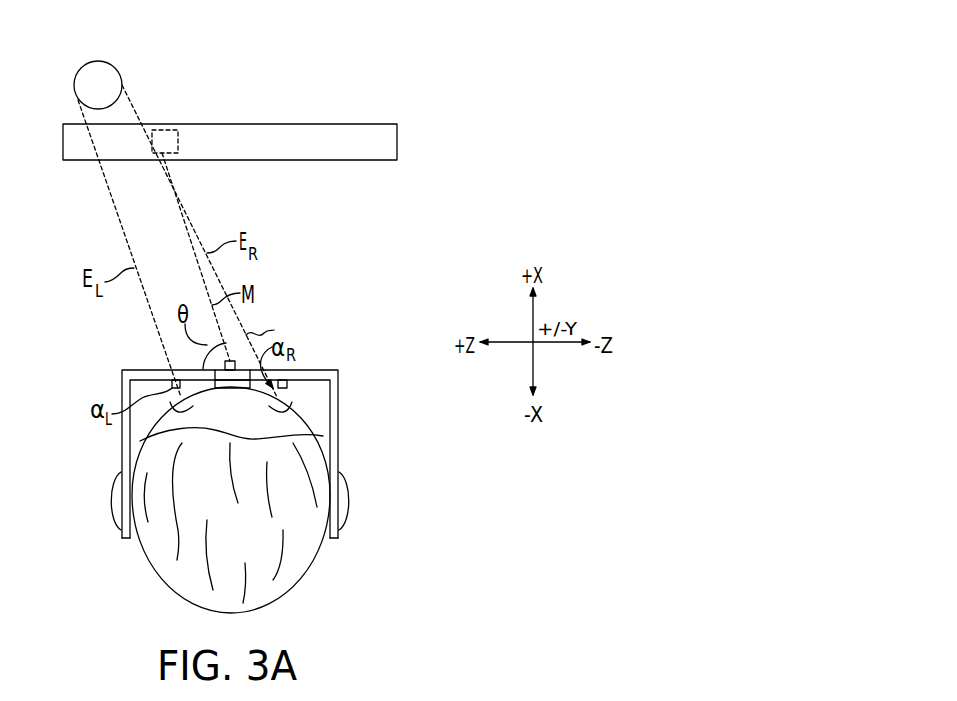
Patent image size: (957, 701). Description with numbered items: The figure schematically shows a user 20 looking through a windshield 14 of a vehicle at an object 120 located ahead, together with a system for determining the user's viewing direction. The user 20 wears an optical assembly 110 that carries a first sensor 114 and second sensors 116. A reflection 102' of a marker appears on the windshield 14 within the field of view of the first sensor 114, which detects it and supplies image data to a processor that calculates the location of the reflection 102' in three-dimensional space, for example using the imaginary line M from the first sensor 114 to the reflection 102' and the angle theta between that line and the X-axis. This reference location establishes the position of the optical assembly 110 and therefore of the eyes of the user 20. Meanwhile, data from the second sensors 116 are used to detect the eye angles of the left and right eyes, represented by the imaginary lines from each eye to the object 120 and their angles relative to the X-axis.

The object 120 is at (96, 61).
The windshield 14 is at (267, 124).
The reflection of the marker 102' is at (181, 114).
The optical assembly 110 is at (110, 457).
The first sensor 114 is at (238, 358).
The second sensors 116 is at (177, 369).
The user 20 is at (325, 565).